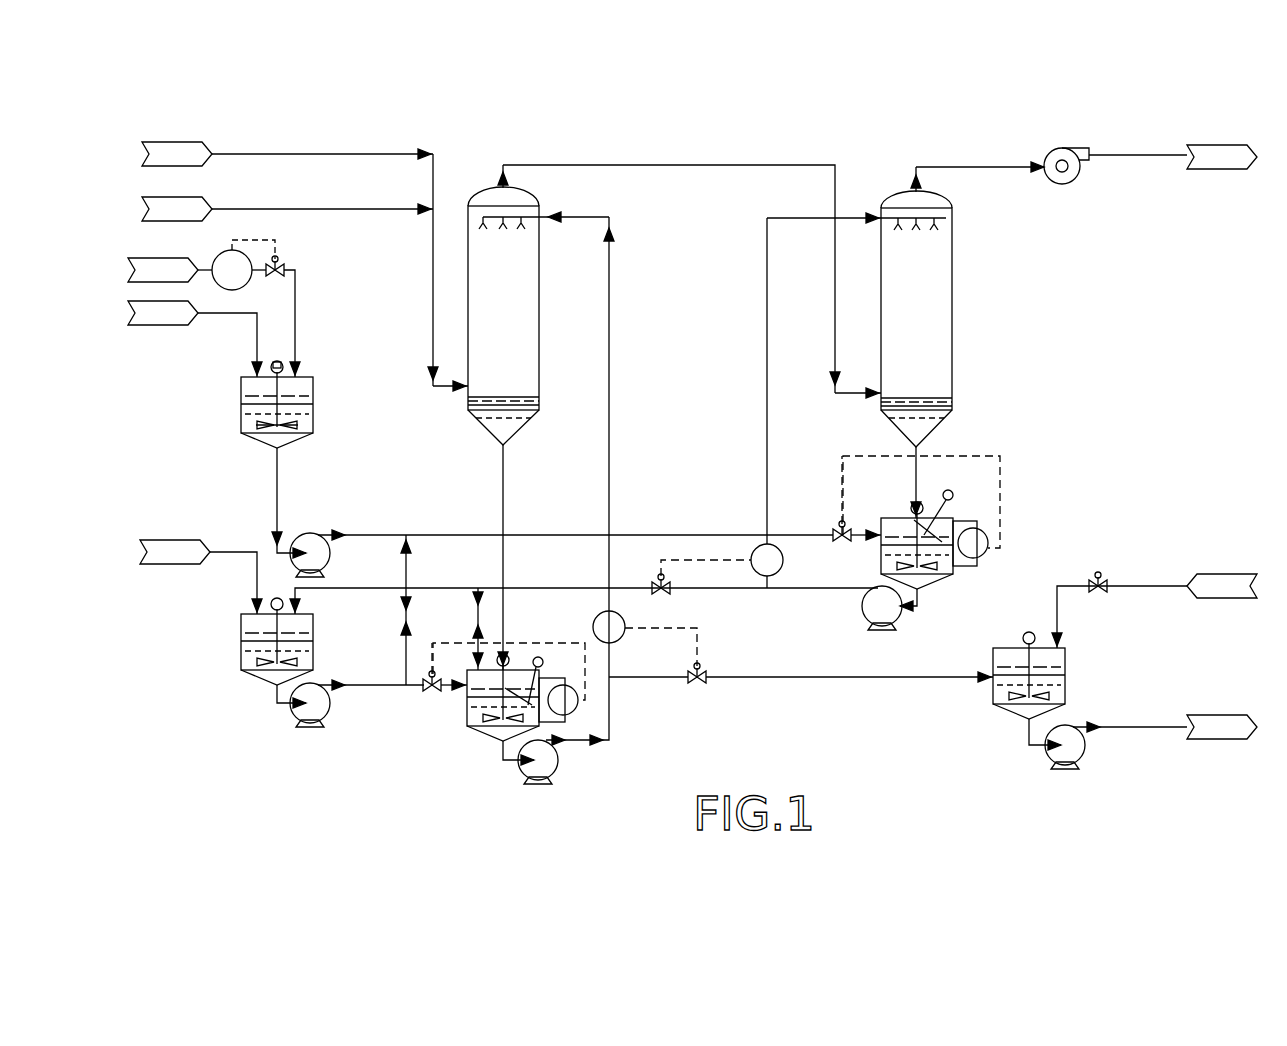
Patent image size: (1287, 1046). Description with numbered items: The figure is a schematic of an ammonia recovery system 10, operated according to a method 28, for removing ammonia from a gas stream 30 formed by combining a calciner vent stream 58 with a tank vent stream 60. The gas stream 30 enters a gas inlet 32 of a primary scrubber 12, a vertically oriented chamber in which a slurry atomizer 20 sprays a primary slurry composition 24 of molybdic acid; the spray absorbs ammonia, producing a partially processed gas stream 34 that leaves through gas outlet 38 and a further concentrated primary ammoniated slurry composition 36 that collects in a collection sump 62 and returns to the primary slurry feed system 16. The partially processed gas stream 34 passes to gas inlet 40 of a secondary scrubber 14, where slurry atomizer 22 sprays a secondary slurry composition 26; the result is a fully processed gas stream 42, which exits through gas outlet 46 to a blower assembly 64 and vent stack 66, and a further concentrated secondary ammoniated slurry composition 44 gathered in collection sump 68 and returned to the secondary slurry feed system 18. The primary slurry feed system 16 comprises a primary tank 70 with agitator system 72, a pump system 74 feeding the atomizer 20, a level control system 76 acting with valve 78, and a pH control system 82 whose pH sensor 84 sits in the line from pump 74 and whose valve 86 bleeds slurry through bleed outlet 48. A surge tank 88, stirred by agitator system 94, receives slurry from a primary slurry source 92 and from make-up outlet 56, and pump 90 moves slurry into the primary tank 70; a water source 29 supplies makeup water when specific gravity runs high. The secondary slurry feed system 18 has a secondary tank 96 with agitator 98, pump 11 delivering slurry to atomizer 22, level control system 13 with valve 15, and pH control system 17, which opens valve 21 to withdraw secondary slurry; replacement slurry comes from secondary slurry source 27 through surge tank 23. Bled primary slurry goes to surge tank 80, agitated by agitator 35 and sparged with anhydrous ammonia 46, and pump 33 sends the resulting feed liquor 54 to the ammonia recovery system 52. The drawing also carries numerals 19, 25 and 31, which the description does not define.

The ammonia recovery system 10 is at (287, 147).
The pump 11 is at (862, 610).
The primary scrubber 12 is at (541, 297).
The level control system 13 is at (989, 543).
The secondary scrubber 14 is at (953, 284).
The valve 15 is at (835, 528).
The primary slurry feed system 16 is at (485, 736).
The pH control system 17 is at (707, 556).
The secondary slurry feed system 18 is at (935, 578).
The pH analyzer controller 19 is at (784, 565).
The slurry atomizer 20 is at (512, 215).
The valve 21 is at (668, 592).
The slurry atomizer 22 is at (935, 216).
The surge tank 23 is at (313, 420).
The primary slurry composition 24 is at (493, 652).
The feed pump 25 is at (330, 553).
The secondary slurry composition 26 is at (295, 388).
The secondary slurry source 27 is at (195, 339).
The method 28 is at (1040, 250).
The water source 29 is at (214, 308).
The gas stream 30 is at (433, 290).
The impeller 31 is at (250, 430).
The gas inlet 32 is at (433, 392).
The pump 33 is at (1085, 752).
The partially processed gas stream 34 is at (537, 165).
The agitator 35 is at (995, 688).
The further concentrated primary ammoniated slurry composition 36 is at (497, 397).
The gas outlet 38 is at (497, 176).
The gas inlet 40 is at (840, 395).
The fully processed gas stream 42 is at (975, 167).
The further concentrated secondary ammoniated slurry composition 44 is at (932, 402).
The gas outlet 46 is at (913, 187).
The bleed outlet 48 is at (660, 680).
The ammonia recovery system 52 is at (1222, 727).
The feed liquor 54 is at (1135, 727).
The make-up outlet 56 is at (905, 620).
The calciner vent stream 58 is at (287, 154).
The tank vent stream 60 is at (287, 209).
The collection sump 62 is at (518, 430).
The blower assembly 64 is at (1075, 183).
The vent stack 66 is at (1173, 157).
The collection sump 68 is at (940, 430).
The primary tank 70 is at (466, 712).
The agitator system 72 is at (540, 655).
The pump system 74 is at (560, 768).
The level control system 76 is at (610, 740).
The valve 78 is at (430, 698).
The surge tank 80 is at (1067, 668).
The pH control system 82 is at (666, 635).
The pH sensor 84 is at (611, 611).
The valve 86 is at (697, 688).
The surge tank 88 is at (241, 648).
The pump 90 is at (325, 722).
The primary slurry source 92 is at (201, 577).
The agitator system 94 is at (298, 663).
The secondary tank 96 is at (953, 566).
The agitator 98 is at (956, 492).